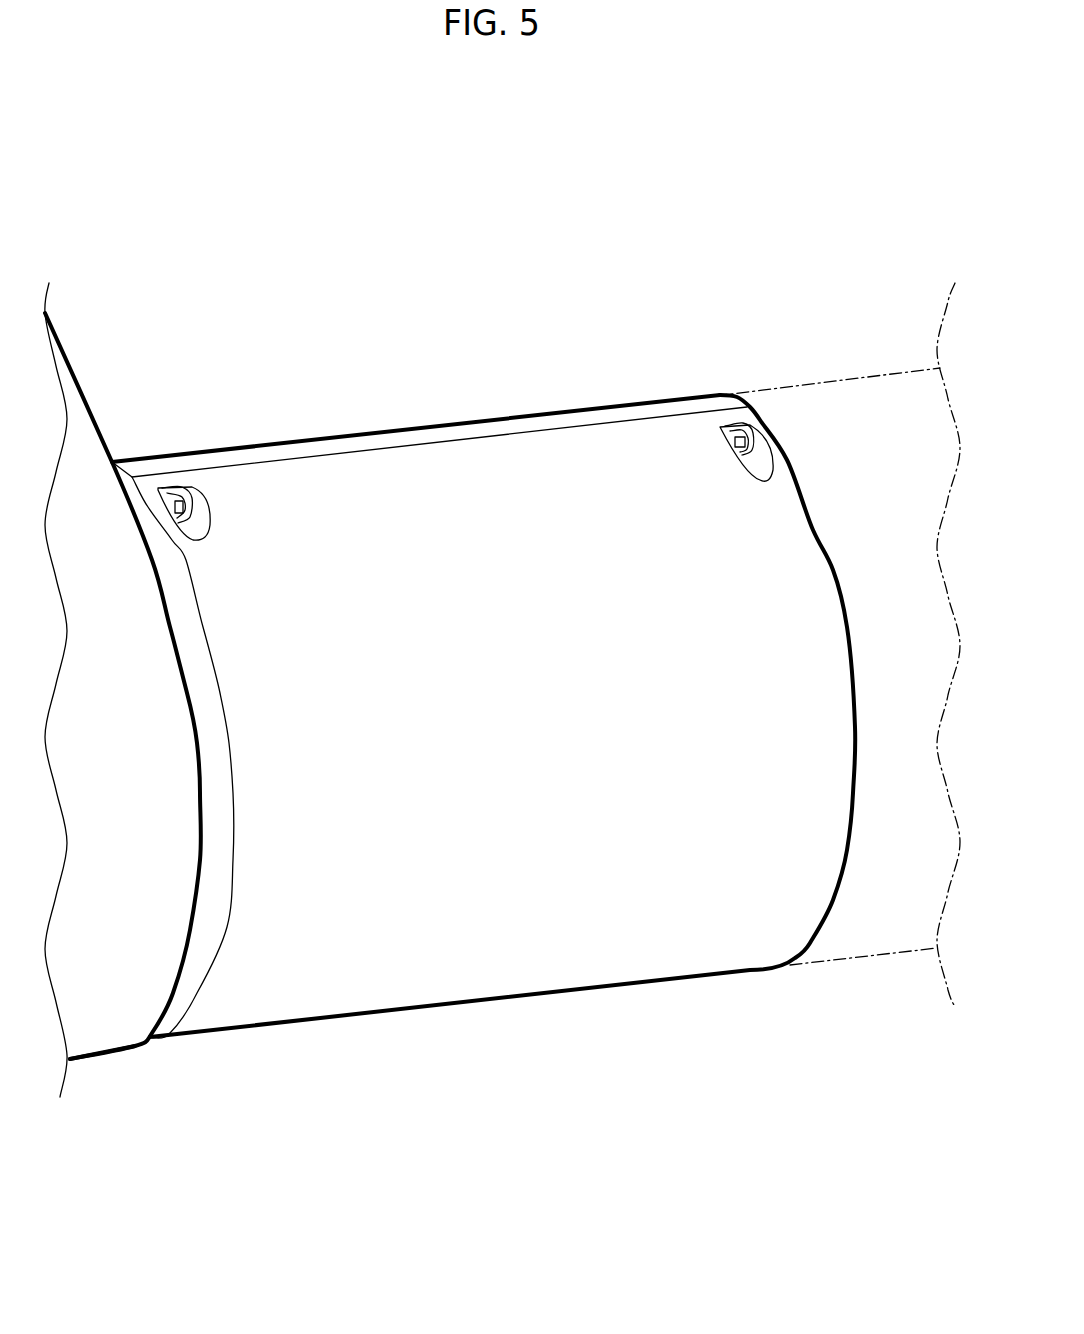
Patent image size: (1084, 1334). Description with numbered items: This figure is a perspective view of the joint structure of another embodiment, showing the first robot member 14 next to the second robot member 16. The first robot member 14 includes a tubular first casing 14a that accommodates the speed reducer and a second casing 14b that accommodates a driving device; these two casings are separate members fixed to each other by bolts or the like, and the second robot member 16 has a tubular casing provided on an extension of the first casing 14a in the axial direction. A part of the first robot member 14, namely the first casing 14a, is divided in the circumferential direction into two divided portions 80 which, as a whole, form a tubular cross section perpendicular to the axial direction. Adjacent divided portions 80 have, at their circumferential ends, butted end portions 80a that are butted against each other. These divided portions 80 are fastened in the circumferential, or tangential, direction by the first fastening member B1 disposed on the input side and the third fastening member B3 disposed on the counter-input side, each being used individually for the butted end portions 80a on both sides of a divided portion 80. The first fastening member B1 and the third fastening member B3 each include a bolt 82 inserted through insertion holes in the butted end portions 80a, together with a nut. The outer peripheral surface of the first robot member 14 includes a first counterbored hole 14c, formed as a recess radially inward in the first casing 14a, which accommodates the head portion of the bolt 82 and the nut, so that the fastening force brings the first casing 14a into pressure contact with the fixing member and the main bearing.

The first robot member 14 is at (646, 360).
The first casing 14a is at (498, 418).
The second casing 14b is at (880, 930).
The first counterbored hole 14c is at (204, 527).
The second robot member 16 is at (109, 1035).
The divided portion 80 is at (403, 428).
The butted end portion 80a is at (270, 455).
The bolt 82 is at (171, 484).
The first fastening member B1 is at (762, 443).
The third fastening member B3 is at (190, 493).